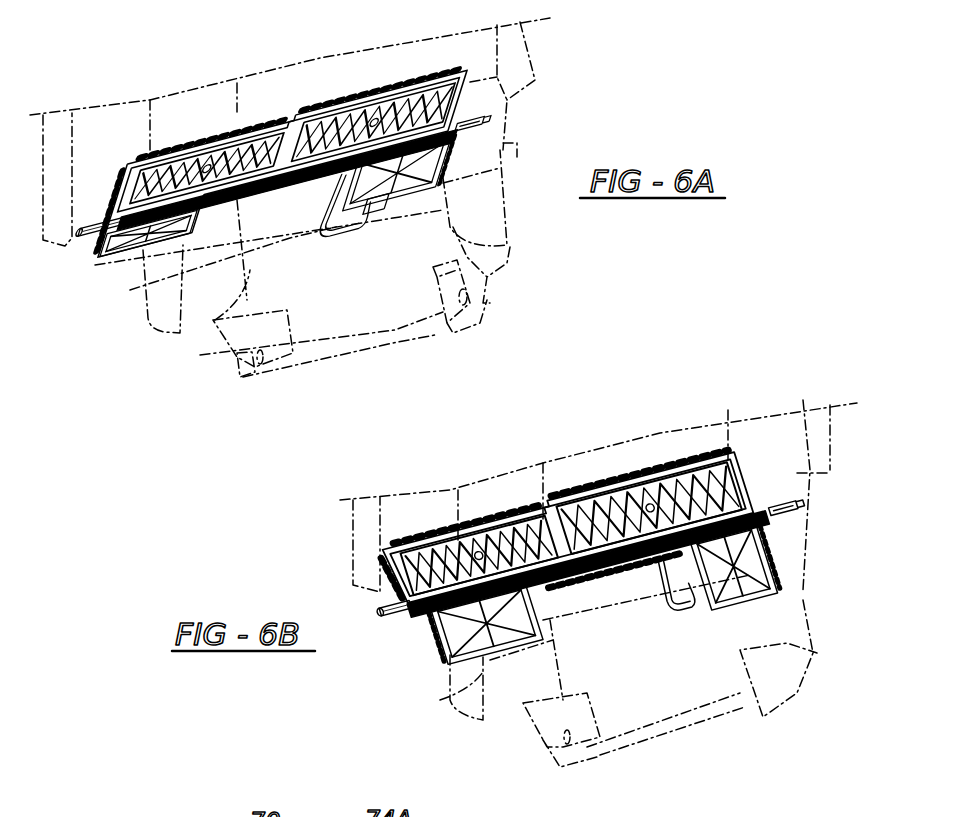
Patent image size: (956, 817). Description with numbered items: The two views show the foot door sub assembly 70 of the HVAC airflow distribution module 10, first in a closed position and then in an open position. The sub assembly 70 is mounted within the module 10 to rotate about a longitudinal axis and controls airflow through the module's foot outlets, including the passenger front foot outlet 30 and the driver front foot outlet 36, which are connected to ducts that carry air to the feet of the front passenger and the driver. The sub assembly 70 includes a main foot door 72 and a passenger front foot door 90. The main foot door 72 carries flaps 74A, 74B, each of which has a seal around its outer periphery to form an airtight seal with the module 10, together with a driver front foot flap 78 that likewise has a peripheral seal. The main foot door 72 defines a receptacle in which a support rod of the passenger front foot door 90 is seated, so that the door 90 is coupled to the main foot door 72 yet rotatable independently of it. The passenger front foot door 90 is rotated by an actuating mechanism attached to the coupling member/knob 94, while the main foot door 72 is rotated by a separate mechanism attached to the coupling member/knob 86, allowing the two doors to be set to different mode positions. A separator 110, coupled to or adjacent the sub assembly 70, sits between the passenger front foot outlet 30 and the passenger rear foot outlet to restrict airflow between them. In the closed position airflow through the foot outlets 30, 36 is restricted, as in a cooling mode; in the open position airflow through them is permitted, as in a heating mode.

In FIG. 6A, the HVAC airflow distribution module 10 is at (72, 88).
In FIG. 6B, the HVAC airflow distribution module 10 is at (323, 492).
In FIG. 6A, the passenger front foot outlet 30 is at (513, 218).
In FIG. 6B, the passenger front foot outlet 30 is at (820, 620).
In FIG. 6A, the driver front foot outlet 36 is at (170, 318).
In FIG. 6B, the driver front foot outlet 36 is at (477, 697).
In FIG. 6A, the foot door sub assembly 70 is at (314, 91).
In FIG. 6B, the foot door sub assembly 70 is at (750, 452).
In FIG. 6A, the main foot door 72 is at (297, 195).
In FIG. 6B, the main foot door 72 is at (593, 500).
In FIG. 6A, the flap 74A is at (380, 113).
In FIG. 6B, the flap 74A is at (648, 508).
In FIG. 6A, the flap 74B is at (207, 165).
In FIG. 6B, the flap 74B is at (479, 555).
In FIG. 6A, the driver front foot flap 78 is at (135, 260).
In FIG. 6B, the driver front foot flap 78 is at (443, 630).
In FIG. 6A, the coupling member/knob 86 is at (100, 228).
In FIG. 6B, the coupling member/knob 86 is at (397, 610).
In FIG. 6A, the passenger front foot door 90 is at (437, 167).
In FIG. 6B, the passenger front foot door 90 is at (750, 550).
In FIG. 6A, the coupling member/knob 94 is at (480, 123).
In FIG. 6B, the coupling member/knob 94 is at (800, 513).
In FIG. 6A, the separator 110 is at (367, 218).
In FIG. 6B, the separator 110 is at (681, 600).